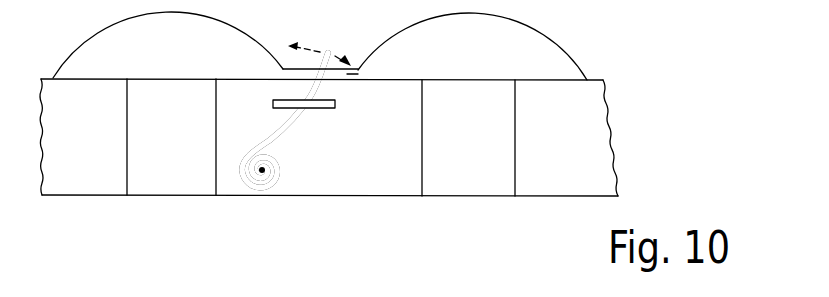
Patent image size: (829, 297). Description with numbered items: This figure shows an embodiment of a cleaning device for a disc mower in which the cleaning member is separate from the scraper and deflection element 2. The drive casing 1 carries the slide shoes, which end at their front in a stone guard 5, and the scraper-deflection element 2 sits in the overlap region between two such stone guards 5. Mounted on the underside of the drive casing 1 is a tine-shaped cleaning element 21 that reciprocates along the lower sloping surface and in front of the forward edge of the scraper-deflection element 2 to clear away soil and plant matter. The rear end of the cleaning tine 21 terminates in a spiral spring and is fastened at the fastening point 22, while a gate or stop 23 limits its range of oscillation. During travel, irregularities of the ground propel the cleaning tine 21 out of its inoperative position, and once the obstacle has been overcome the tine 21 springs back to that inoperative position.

The drive casing 1 is at (91, 181).
The scraper and deflection element 2 is at (358, 71).
The stone guard 5 is at (257, 55).
The tine-shaped cleaning element 21 is at (331, 53).
The fastening point 22 is at (263, 170).
The gate or stop 23 is at (317, 109).